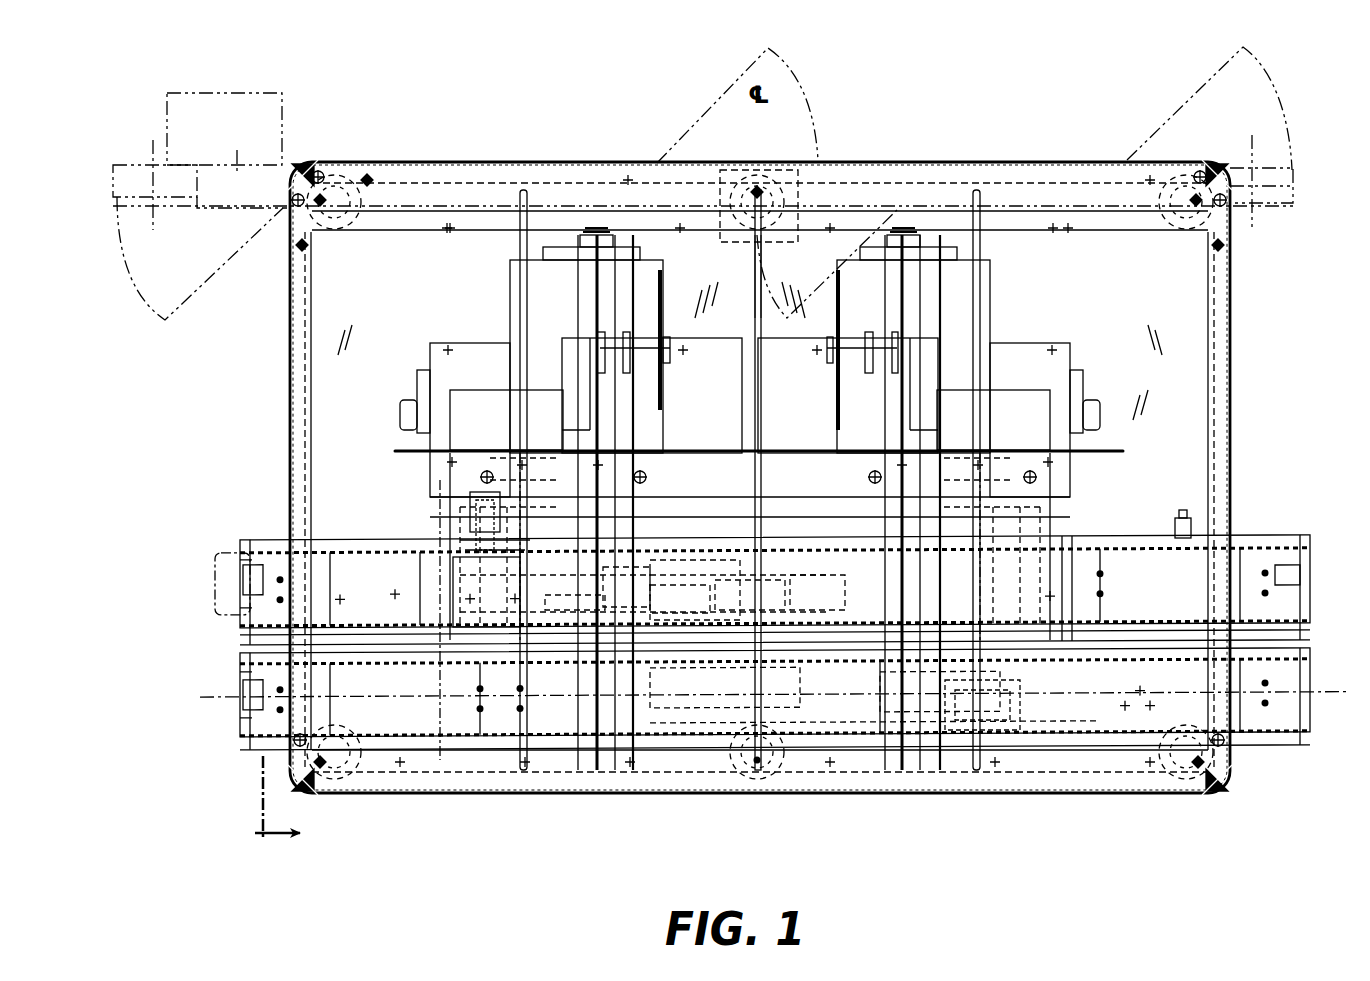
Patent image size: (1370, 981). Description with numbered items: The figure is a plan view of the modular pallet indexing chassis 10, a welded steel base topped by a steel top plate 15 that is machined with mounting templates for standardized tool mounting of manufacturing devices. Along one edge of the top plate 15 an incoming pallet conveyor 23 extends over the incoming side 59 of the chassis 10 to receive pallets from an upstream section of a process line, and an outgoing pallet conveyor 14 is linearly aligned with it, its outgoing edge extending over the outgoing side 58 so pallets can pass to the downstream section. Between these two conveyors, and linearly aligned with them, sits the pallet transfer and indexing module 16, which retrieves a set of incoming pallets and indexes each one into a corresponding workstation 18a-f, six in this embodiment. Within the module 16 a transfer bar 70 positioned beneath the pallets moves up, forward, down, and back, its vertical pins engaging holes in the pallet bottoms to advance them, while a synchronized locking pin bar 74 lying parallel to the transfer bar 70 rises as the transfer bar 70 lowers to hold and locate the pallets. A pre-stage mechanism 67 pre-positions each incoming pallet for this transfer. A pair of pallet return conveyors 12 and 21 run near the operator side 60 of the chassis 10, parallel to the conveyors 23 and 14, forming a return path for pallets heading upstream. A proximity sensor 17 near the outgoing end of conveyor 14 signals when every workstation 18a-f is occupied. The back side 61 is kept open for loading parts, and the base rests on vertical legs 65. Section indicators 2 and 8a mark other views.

The chassis 10 is at (1250, 332).
The pallet return conveyor 12 is at (1308, 756).
The outgoing pallet conveyor 14 is at (1308, 541).
The top plate 15 is at (1148, 353).
The pallet transfer and indexing module 16 is at (990, 690).
The proximity sensor 17 is at (1188, 522).
The workstations 18a-f is at (803, 570).
The pallet return conveyor 21 is at (235, 753).
The incoming pallet conveyor 23 is at (238, 541).
The outgoing side 58 is at (1251, 422).
The incoming side 59 is at (283, 360).
The operator side 60 is at (920, 800).
The back side 61 is at (970, 150).
The vertical legs 65 is at (307, 160).
The pre-stage mechanism 67 is at (478, 488).
The transfer bar 70 is at (547, 590).
The locking pin bar 74 is at (596, 600).
The section view indicator 2 is at (683, 822).
The section view indicator 8a is at (381, 643).